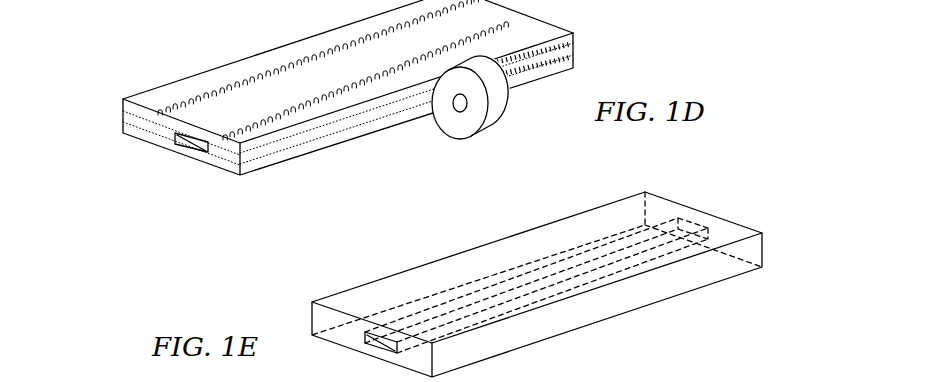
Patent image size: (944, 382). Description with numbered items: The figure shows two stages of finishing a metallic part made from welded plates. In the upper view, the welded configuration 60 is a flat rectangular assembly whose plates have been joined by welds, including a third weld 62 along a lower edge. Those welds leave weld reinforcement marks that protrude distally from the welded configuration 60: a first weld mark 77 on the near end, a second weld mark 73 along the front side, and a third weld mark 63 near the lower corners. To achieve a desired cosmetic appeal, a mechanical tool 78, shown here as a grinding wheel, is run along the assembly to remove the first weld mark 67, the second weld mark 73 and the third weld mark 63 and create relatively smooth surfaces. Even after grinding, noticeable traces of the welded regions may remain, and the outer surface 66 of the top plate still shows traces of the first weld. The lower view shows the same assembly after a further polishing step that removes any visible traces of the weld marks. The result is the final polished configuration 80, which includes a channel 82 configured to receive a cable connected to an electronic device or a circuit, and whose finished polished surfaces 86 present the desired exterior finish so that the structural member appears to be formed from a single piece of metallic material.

In FIG. 1D, the welded configuration 60 is at (310, 102).
In FIG. 1D, the third weld 62 is at (109, 128).
In FIG. 1D, the third weld mark 63 is at (232, 157).
In FIG. 1D, the outer surface of the top plate 66 is at (331, 72).
In FIG. 1D, the first weld mark 67 is at (268, 113).
In FIG. 1D, the second weld mark 73 is at (343, 132).
In FIG. 1D, the first weld mark 77 is at (167, 113).
In FIG. 1D, the mechanical tool 78 is at (510, 116).
In FIG. 1E, the final polished configuration 80 is at (537, 273).
In FIG. 1E, the channel 82 is at (665, 222).
In FIG. 1E, the finished polished surfaces 86 is at (603, 303).